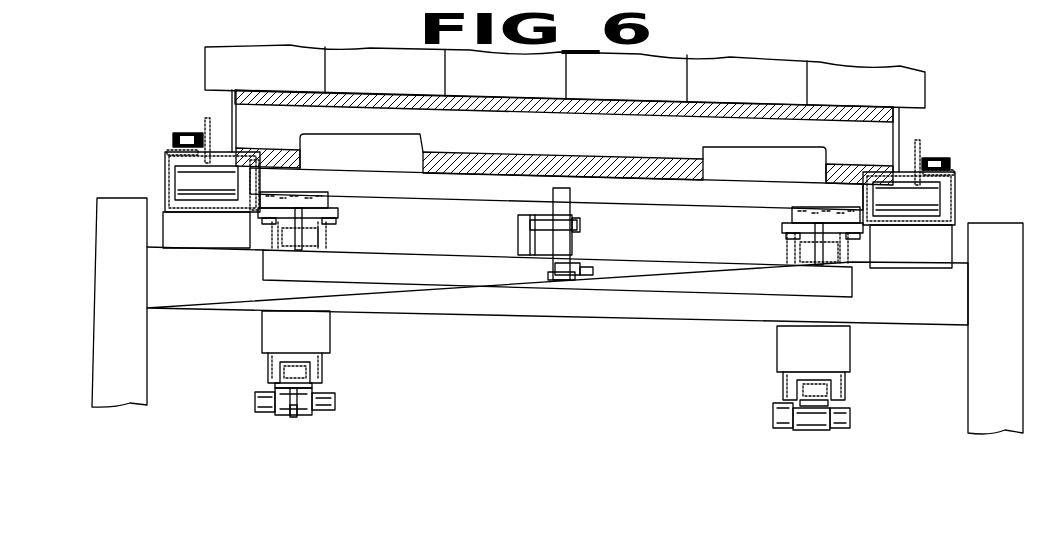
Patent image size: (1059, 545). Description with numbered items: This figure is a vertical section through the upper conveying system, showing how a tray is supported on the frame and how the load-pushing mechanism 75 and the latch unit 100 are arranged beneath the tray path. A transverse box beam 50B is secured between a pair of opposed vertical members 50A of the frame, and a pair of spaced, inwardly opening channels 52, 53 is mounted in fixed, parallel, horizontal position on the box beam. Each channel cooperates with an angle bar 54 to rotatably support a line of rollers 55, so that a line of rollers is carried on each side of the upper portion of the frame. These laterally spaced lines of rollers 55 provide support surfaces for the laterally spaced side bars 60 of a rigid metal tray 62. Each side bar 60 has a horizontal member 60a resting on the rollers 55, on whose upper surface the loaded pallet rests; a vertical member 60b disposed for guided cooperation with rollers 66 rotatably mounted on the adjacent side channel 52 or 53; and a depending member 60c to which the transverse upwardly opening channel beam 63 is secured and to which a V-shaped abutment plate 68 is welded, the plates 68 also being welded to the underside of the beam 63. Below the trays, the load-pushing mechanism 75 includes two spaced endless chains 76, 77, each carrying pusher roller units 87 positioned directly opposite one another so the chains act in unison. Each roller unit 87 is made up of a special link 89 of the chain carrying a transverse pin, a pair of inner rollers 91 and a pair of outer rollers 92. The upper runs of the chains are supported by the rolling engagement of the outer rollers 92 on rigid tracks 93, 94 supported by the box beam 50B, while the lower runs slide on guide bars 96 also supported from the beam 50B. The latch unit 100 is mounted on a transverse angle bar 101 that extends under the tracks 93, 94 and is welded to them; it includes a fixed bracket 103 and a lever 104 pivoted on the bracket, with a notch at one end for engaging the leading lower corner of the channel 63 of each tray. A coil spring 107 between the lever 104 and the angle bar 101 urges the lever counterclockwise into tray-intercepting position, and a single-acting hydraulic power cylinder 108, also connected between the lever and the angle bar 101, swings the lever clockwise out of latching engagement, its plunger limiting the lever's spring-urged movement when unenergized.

The vertical members 50A is at (97, 242).
The transverse box beam 50B is at (558, 318).
The inwardly opening channel 52 is at (167, 153).
The inwardly opening channel 53 is at (954, 172).
The angle bar 54 is at (232, 206).
The rollers 55 is at (165, 168).
The side bars 60 is at (236, 134).
The horizontal member 60a is at (246, 152).
The vertical member 60b is at (207, 118).
The depending member 60c is at (296, 172).
The tray 62 is at (443, 174).
The channel beam 63 is at (455, 201).
The rollers 66 is at (182, 133).
The V-shaped abutment plate 68 is at (328, 194).
The load-pushing mechanism 75 is at (852, 388).
The endless chain 76 is at (299, 250).
The endless chain 77 is at (821, 264).
The pusher roller units 87 is at (331, 390).
The special link 89 is at (336, 226).
The inner rollers 91 is at (275, 386).
The outer rollers 92 is at (338, 212).
The track 93 is at (268, 246).
The track 94 is at (328, 250).
The guide bars 96 is at (268, 366).
The latch unit 100 is at (577, 180).
The transverse angle bar 101 is at (474, 288).
The fixed bracket 103 is at (518, 242).
The lever 104 is at (572, 232).
The coil spring 107 is at (593, 271).
The hydraulic power cylinder 108 is at (572, 268).